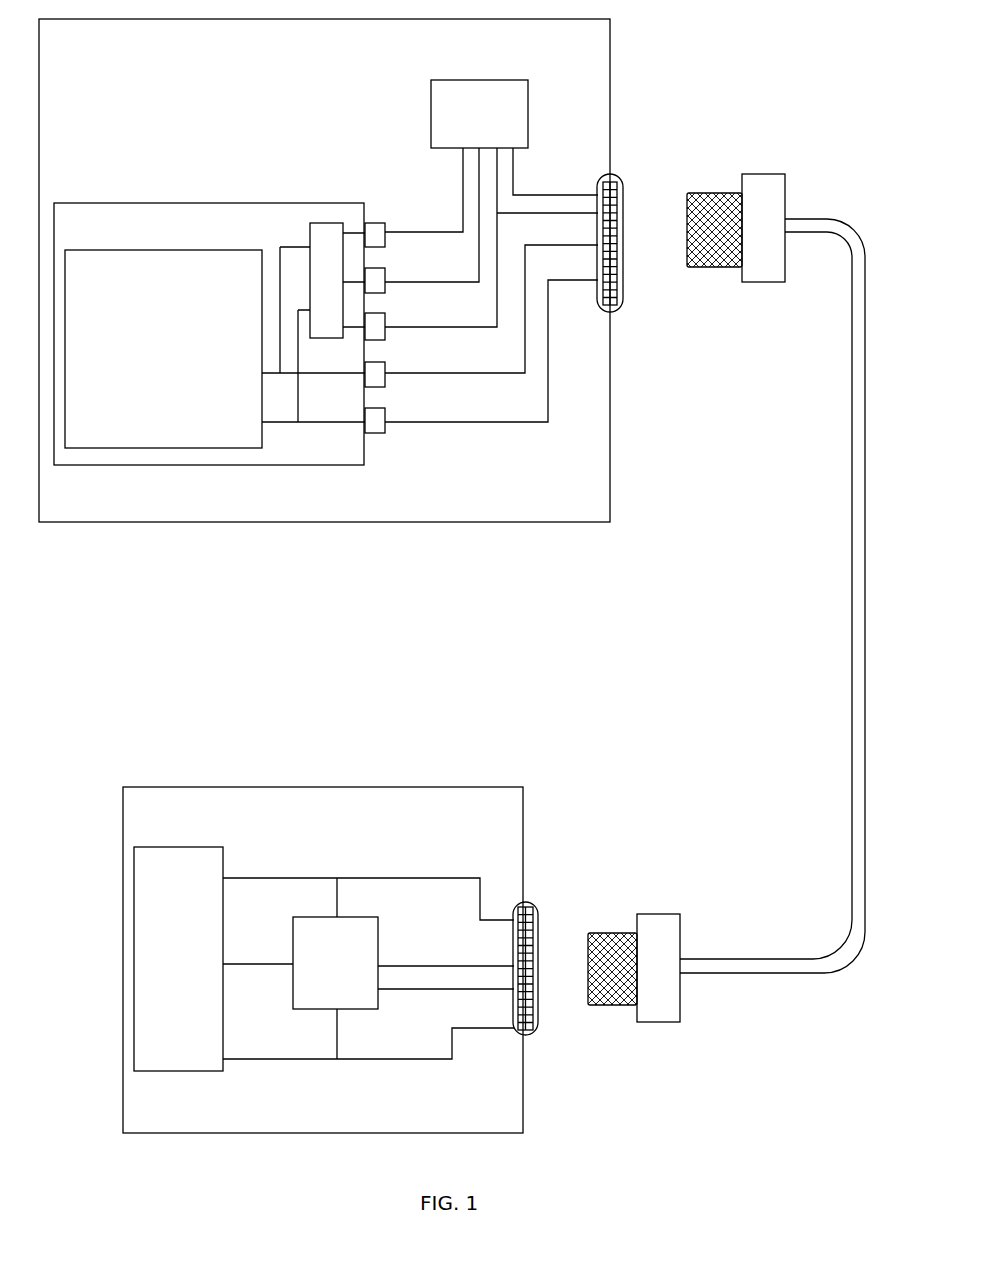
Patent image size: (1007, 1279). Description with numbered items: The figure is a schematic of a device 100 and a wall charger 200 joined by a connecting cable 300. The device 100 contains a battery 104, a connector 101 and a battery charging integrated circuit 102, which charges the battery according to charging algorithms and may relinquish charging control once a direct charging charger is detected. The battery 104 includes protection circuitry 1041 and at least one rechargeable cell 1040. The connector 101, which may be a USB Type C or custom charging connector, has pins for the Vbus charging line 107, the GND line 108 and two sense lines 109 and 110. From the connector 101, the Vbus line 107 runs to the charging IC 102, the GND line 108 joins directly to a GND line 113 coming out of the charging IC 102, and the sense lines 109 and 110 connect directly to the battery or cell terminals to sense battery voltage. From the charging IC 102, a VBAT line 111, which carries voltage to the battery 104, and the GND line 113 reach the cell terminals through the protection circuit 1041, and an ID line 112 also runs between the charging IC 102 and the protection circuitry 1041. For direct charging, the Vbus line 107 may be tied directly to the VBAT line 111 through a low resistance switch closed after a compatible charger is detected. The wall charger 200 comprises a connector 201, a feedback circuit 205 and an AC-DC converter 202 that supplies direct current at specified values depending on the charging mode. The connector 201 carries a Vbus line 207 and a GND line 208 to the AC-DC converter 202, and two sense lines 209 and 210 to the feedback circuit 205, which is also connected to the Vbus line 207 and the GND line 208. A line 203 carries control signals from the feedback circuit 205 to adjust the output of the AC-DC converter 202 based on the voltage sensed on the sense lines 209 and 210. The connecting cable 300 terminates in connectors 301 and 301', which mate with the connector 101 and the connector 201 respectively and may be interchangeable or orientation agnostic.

The device 100 is at (324, 270).
The connector 101 is at (618, 157).
The battery charging integrated circuit 102 is at (479, 114).
The battery 104 is at (209, 334).
The rechargeable cell 1040 is at (163, 349).
The protection circuitry 1041 is at (310, 220).
The Vbus line 107 is at (517, 168).
The GND line 108 is at (557, 213).
The sense line 109 is at (512, 377).
The sense line 110 is at (472, 425).
The VBAT line 111 is at (462, 213).
The ID line 112 is at (480, 253).
The GND line 113 is at (495, 295).
The charger 200 is at (323, 960).
The connector 201 is at (540, 897).
The AC-DC converter 202 is at (178, 959).
The line 203 is at (258, 967).
The feedback circuit 205 is at (335, 968).
The Vbus line 207 is at (410, 877).
The GND line 208 is at (420, 1063).
The sense line 209 is at (432, 965).
The sense line 210 is at (420, 990).
The connecting cable 300 is at (758, 638).
The connector 301 is at (768, 204).
The connector 301' is at (658, 1013).